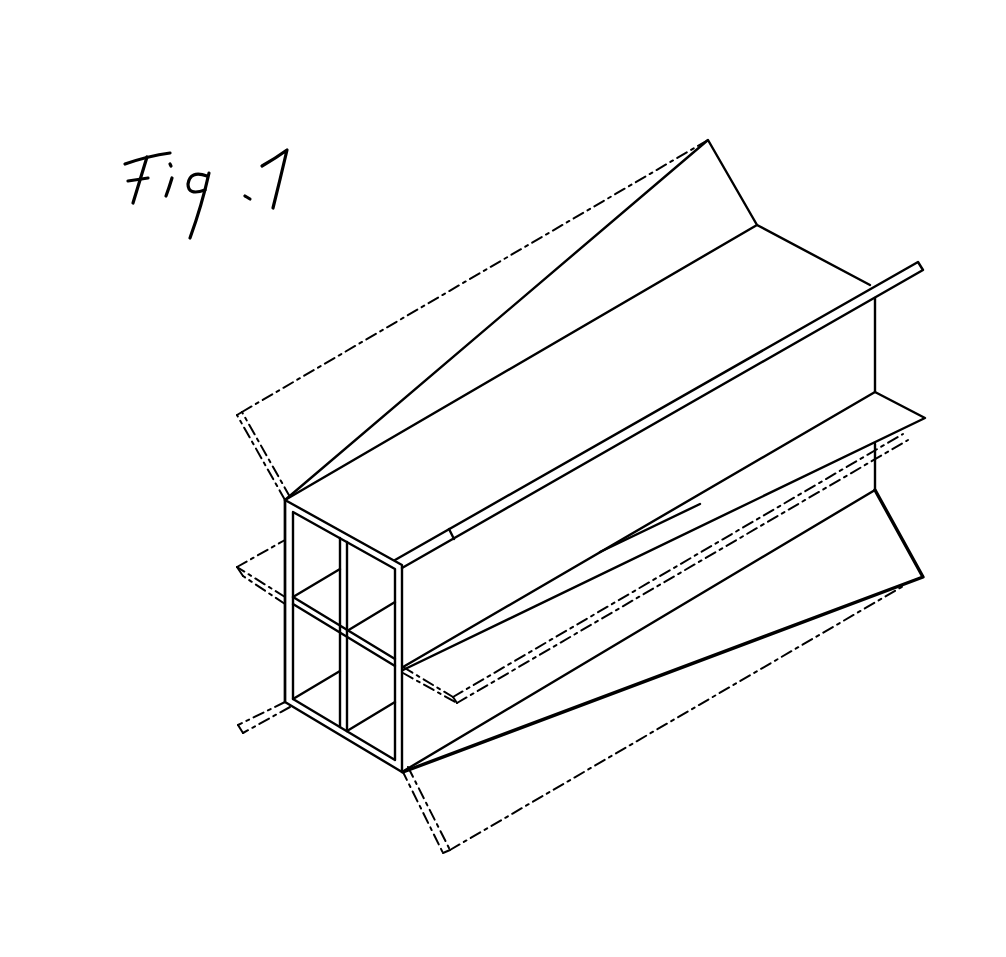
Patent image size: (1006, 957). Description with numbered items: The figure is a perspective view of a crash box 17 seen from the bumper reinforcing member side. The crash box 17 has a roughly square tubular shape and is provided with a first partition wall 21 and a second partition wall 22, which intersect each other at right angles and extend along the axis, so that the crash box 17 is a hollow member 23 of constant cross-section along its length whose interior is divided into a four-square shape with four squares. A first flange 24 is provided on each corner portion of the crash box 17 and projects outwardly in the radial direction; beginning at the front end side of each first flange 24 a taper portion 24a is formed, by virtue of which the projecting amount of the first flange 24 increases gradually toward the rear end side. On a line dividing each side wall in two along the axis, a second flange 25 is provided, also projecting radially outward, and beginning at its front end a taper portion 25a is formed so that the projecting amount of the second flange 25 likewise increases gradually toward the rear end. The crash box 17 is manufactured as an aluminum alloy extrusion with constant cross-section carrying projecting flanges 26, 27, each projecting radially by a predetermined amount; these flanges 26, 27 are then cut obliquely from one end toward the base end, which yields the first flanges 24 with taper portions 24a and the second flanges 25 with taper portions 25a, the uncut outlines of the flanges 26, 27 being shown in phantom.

The crash box 17 is at (660, 116).
The first partition wall 21 is at (345, 563).
The second partition wall 22 is at (360, 647).
The hollow member 23 is at (283, 497).
The first flange 24 is at (728, 178).
The taper portion 24a is at (497, 318).
The second flange 25 is at (902, 410).
The taper portion 25a is at (647, 557).
The flange 26 is at (237, 433).
The flange 27 is at (253, 590).